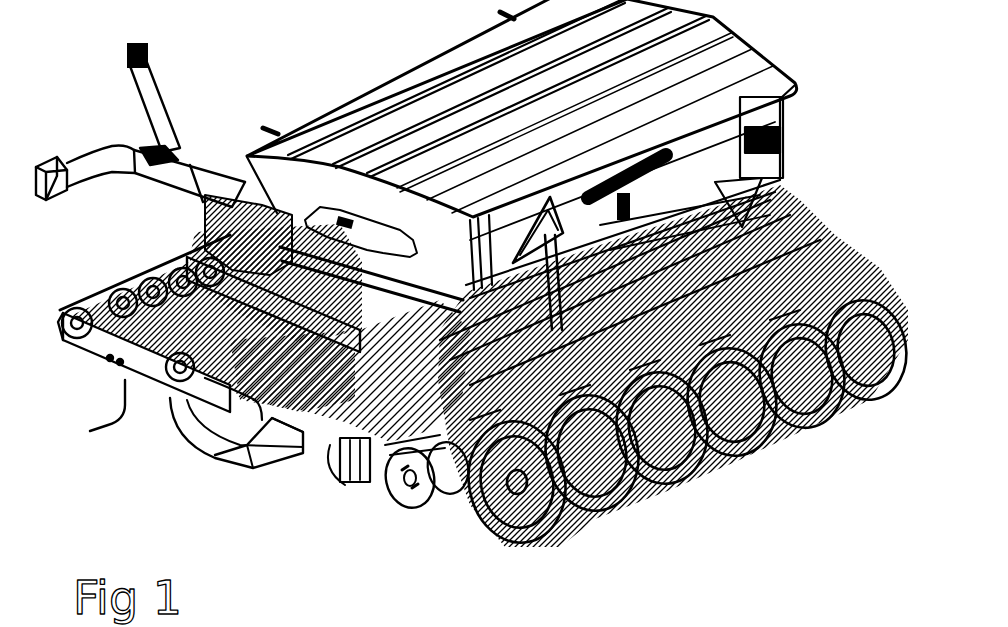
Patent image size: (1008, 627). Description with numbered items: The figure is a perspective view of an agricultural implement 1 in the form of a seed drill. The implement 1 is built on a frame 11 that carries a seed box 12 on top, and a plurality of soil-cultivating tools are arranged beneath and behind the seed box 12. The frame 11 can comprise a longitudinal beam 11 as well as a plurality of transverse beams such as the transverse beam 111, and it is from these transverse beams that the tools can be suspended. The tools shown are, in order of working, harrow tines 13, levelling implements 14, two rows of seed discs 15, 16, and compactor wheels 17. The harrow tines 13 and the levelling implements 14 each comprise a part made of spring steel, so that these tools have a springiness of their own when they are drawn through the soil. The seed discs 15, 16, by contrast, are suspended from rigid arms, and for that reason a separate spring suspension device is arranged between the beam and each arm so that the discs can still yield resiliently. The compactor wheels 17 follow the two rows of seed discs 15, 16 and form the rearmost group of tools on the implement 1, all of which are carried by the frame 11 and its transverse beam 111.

The agricultural implement 1 is at (90, 62).
The frame 11 is at (167, 180).
The transverse beam 111 is at (112, 300).
The seed box 12 is at (363, 96).
The harrow tines 13 is at (126, 409).
The levelling implements 14 is at (270, 433).
The seed discs 15 is at (350, 478).
The seed discs 16 is at (423, 497).
The compactor wheels 17 is at (557, 540).